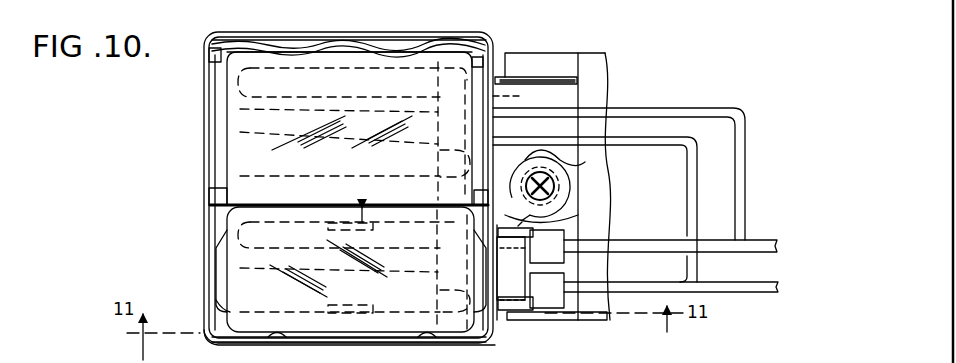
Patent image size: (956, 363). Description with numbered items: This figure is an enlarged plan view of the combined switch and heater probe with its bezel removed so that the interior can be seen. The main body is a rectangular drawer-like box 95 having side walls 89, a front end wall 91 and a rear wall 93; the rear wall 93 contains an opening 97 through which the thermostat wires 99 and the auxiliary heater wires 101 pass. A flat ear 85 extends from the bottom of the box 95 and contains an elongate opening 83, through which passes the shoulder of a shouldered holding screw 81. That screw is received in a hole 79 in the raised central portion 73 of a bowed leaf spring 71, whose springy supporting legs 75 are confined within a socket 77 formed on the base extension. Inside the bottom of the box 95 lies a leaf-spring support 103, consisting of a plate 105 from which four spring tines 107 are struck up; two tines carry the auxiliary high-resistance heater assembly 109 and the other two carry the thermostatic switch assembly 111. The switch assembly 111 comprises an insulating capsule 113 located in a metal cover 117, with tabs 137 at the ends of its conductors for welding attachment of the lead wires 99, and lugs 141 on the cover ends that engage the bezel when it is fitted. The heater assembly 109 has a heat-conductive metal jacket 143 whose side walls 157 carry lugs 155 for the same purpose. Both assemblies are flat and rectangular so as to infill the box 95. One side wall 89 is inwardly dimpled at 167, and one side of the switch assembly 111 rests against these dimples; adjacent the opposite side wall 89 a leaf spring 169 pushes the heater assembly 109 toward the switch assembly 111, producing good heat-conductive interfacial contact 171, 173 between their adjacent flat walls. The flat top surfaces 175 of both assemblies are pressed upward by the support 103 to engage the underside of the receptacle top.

The bowed leaf spring 71 is at (525, 66).
The central portion 73 is at (585, 162).
The springy supporting legs 75 is at (560, 85).
The socket 77 is at (578, 82).
The hole 79 is at (520, 228).
The shouldered holding screw 81 is at (562, 180).
The elongate opening 83 is at (532, 168).
The flat ear 85 is at (578, 215).
The side walls 89 is at (358, 33).
The front end wall 91 is at (209, 222).
The rear wall 93 is at (498, 326).
The box 95 is at (476, 31).
The opening 97 is at (520, 99).
The thermostat wires 99 is at (626, 287).
The auxiliary heater wires 101 is at (655, 140).
The leaf-spring support 103 is at (218, 341).
The plate 105 is at (220, 314).
The spring tines 107 is at (390, 110).
The auxiliary high-resistance heater assembly 109 is at (242, 108).
The thermostatic switch assembly 111 is at (245, 258).
The insulating capsule 113 is at (524, 275).
The metal cover 117 is at (350, 301).
The tabs 137 is at (547, 269).
The lugs 141 is at (219, 285).
The jacket 143 is at (348, 169).
The lugs 155 is at (209, 55).
The side walls 157 is at (272, 50).
The dimples 167 is at (280, 339).
The leaf spring 169 is at (316, 28).
The heat-conductive interfacial contact 171 is at (378, 205).
The heat-conductive interfacial contact 173 is at (362, 222).
The flat top surfaces 175 is at (349, 352).